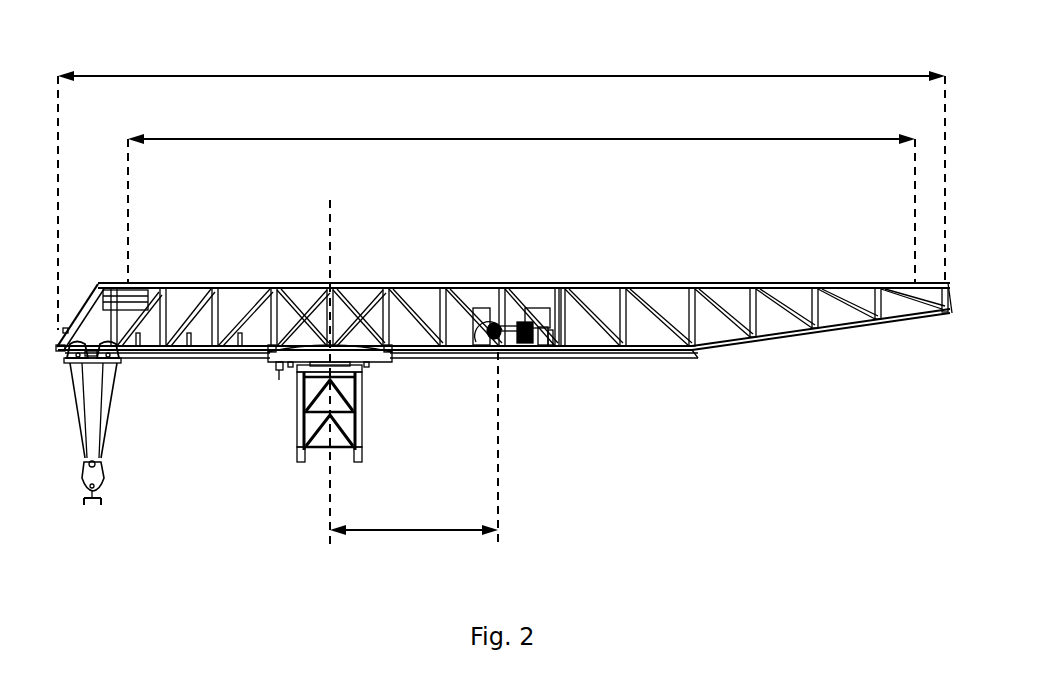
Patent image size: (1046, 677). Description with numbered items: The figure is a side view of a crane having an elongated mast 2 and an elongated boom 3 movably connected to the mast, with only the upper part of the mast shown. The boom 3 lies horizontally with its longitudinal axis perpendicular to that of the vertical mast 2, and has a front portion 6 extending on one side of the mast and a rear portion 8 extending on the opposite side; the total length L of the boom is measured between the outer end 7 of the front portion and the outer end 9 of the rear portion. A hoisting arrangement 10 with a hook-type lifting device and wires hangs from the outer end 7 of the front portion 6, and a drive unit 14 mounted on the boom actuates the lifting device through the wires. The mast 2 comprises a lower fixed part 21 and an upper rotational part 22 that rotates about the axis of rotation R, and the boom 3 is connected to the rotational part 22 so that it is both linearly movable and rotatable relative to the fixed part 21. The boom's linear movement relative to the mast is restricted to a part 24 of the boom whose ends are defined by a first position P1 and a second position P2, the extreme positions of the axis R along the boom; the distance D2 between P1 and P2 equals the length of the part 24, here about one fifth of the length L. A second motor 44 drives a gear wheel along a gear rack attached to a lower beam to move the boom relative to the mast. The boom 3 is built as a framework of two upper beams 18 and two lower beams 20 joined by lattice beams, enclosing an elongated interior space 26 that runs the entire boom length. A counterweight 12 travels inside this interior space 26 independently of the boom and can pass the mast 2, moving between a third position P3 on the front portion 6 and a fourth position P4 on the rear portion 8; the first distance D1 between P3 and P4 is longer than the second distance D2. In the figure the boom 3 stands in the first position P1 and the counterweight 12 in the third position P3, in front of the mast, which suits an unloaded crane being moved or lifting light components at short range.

The mast 2 is at (366, 402).
The boom 3 is at (790, 276).
The front portion 6 is at (200, 286).
The outer end of the front portion 7 is at (66, 357).
The rear portion 8 is at (423, 302).
The outer end of the rear portion 9 is at (948, 314).
The hoisting arrangement 10 is at (78, 464).
The counterweight 12 is at (147, 286).
The drive unit 14 is at (535, 348).
The upper beams 18 is at (605, 282).
The lower beams 20 is at (605, 358).
The lower fixed part 21 is at (355, 444).
The upper rotational part 22 is at (352, 350).
The part of the boom 24 is at (410, 358).
The interior space 26 is at (656, 318).
The second motor 44 is at (280, 376).
The total length of the boom L is at (501, 190).
The first distance D1 is at (521, 195).
The second distance D2 is at (414, 547).
The axis of rotation R is at (328, 357).
The first position P1 is at (330, 346).
The second position P2 is at (500, 354).
The third position P3 is at (120, 282).
The fourth position P4 is at (910, 282).